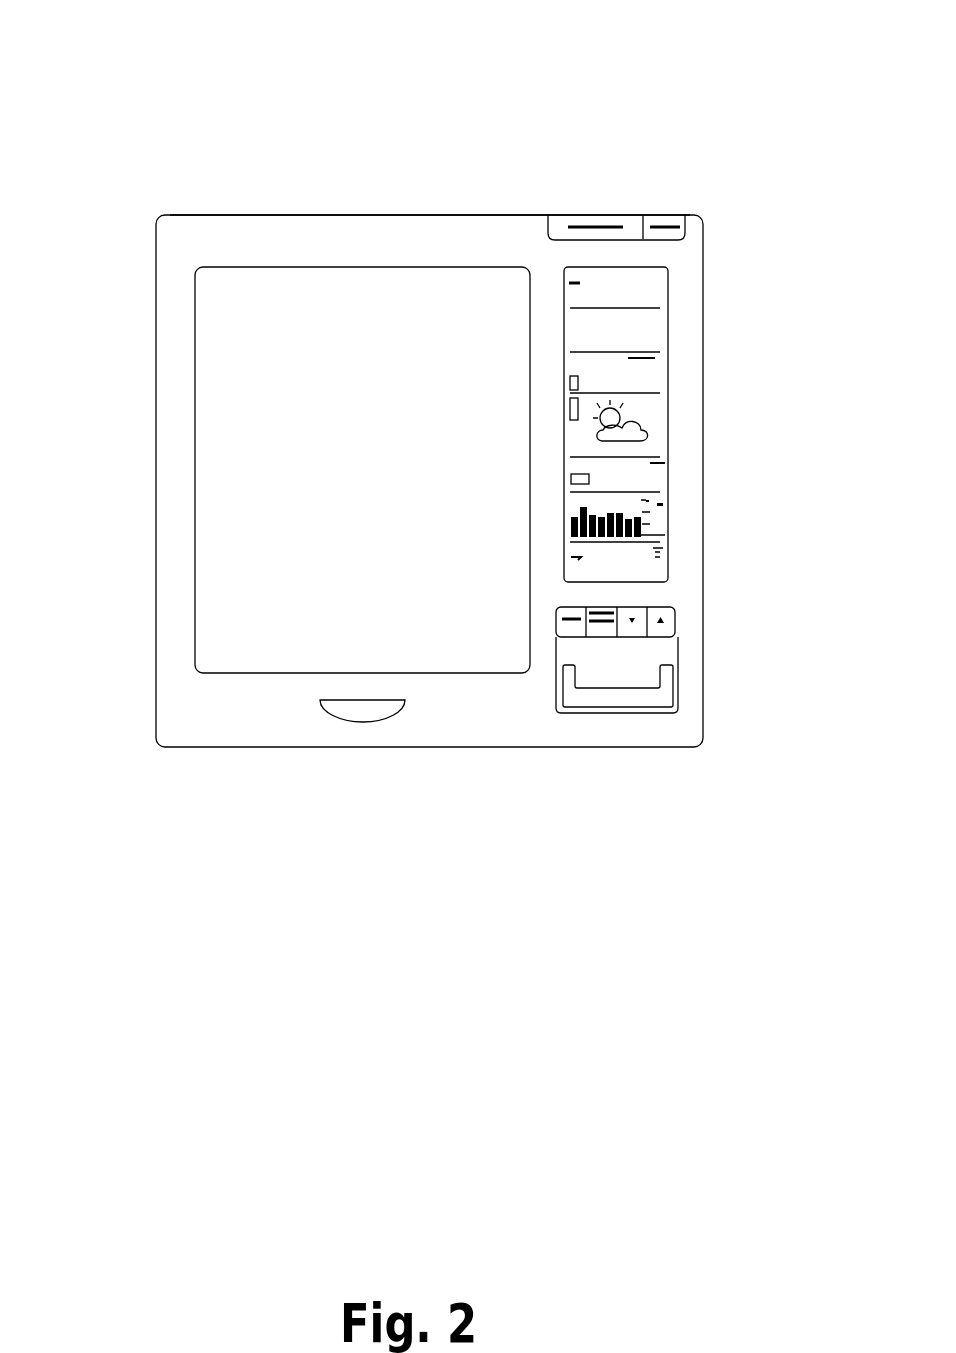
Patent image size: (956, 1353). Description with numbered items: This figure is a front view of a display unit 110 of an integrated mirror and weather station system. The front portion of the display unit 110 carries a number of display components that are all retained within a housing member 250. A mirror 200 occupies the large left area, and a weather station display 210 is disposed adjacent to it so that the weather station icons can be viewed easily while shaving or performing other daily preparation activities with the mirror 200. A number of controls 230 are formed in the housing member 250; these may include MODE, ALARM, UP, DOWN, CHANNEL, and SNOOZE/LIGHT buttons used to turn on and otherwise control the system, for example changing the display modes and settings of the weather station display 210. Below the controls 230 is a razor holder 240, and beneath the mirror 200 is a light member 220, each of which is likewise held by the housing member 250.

The display unit 110 is at (160, 86).
The mirror 200 is at (205, 504).
The weather station display 210 is at (655, 423).
The light member 220 is at (363, 722).
The controls 230 is at (597, 175).
The razor holder 240 is at (655, 694).
The housing member 250 is at (420, 229).